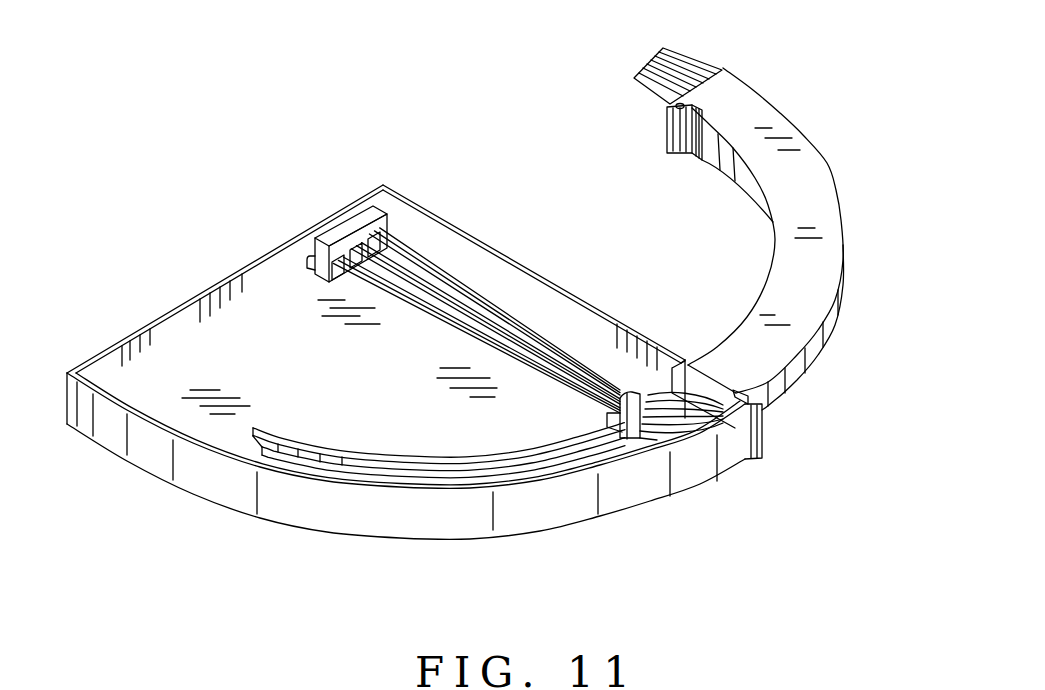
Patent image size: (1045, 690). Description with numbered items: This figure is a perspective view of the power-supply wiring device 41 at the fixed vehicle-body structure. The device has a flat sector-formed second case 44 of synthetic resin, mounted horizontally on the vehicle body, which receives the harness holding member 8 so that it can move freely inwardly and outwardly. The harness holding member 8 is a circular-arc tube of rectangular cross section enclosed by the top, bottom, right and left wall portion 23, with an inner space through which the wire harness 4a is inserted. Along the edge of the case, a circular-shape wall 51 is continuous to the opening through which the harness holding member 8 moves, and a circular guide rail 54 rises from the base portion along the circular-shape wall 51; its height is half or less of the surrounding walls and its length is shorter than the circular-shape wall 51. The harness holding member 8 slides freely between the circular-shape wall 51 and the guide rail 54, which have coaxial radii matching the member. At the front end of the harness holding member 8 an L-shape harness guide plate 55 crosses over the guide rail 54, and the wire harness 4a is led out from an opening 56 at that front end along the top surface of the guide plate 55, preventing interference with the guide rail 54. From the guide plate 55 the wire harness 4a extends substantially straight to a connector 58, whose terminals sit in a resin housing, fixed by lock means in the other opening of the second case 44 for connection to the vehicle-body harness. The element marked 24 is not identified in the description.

The power-supply wiring device 41 is at (868, 25).
The second case 44 is at (520, 557).
The circular-shape wall 51 is at (443, 513).
The circular guide rail 54 is at (420, 452).
The L-shape harness guide plate 55 is at (647, 457).
The opening 56 is at (723, 420).
The connector 58 is at (340, 232).
The wire harness 4a is at (497, 303).
The harness holding member 8 is at (830, 172).
The wall portion 23 is at (848, 286).
The connector 24 is at (665, 128).